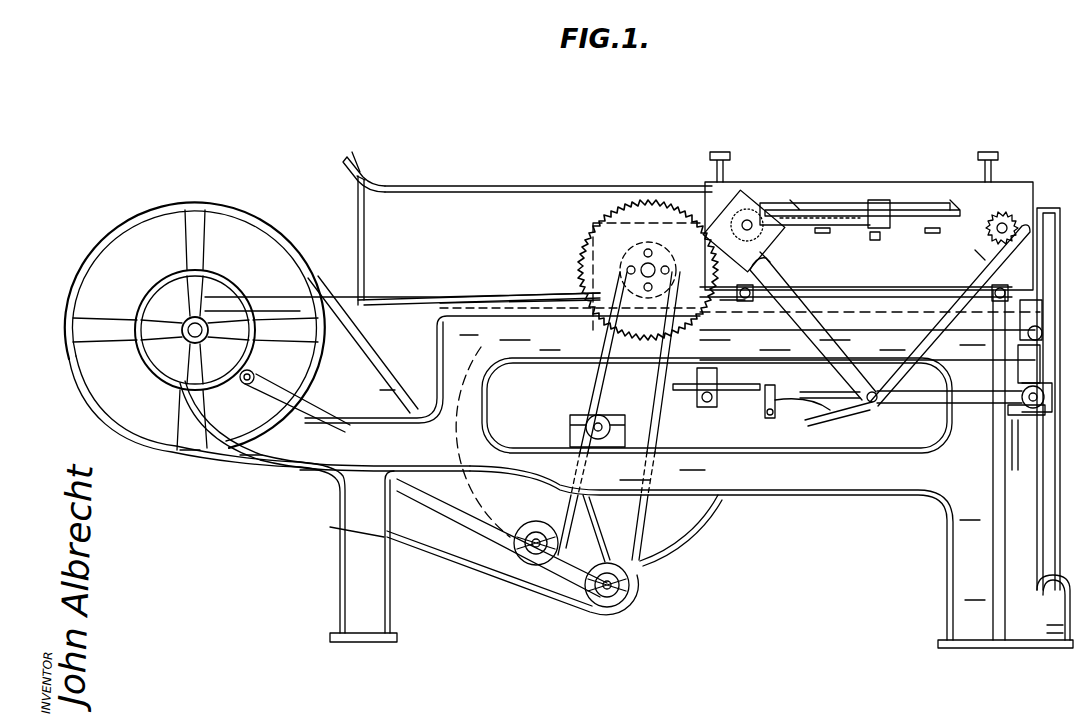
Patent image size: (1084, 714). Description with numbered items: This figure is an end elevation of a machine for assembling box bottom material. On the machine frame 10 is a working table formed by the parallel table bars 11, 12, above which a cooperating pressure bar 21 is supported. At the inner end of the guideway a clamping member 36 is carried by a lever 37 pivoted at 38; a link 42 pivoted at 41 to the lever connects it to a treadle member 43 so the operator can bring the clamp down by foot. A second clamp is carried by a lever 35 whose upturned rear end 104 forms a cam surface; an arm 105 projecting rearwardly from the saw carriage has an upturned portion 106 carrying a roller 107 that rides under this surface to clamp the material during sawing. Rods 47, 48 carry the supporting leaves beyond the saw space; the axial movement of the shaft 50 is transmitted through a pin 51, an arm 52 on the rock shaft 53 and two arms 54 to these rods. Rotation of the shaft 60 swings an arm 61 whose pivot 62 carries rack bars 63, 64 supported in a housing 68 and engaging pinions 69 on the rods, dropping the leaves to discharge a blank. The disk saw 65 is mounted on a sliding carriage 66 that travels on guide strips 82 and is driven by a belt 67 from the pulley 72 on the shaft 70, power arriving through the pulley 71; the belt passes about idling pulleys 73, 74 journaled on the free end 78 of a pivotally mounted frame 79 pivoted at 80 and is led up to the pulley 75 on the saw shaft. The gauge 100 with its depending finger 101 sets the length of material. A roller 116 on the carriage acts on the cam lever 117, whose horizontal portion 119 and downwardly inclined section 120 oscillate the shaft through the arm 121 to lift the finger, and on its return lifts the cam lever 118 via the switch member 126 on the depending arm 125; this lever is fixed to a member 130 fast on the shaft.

The machine frame 10 is at (262, 442).
The table bar 11 is at (930, 235).
The table bar 12 is at (823, 234).
The pressure bar 21 is at (815, 205).
The lever 35 is at (541, 189).
The clamping member 36 is at (858, 211).
The lever 37 is at (1042, 210).
The pivot 38 is at (700, 195).
The pivot 41 is at (1061, 216).
The link 42 is at (1060, 490).
The treadle member 43 is at (1055, 640).
The rod 47 is at (760, 220).
The rod 48 is at (1025, 200).
The shaft 50 is at (1043, 331).
The pin 51 is at (1045, 340).
The arm 52 is at (1046, 315).
The rock shaft 53 is at (912, 297).
The arms 54 is at (742, 302).
The shaft 60 is at (1046, 394).
The arm 61 is at (970, 404).
The pivot 62 is at (872, 404).
The rack bar 63 is at (840, 352).
The rack bar 64 is at (918, 342).
The disk saw 65 is at (641, 224).
The sliding carriage 66 is at (585, 224).
The belt 67 is at (372, 360).
The housing 68 is at (772, 260).
The pinion 69 is at (1004, 224).
The shaft 70 is at (183, 340).
The pulley 71 is at (160, 392).
The pulley 72 is at (206, 224).
The idling pulley 73 is at (545, 525).
The idling pulley 74 is at (627, 574).
The pulley 75 is at (669, 258).
The free end 78 is at (576, 580).
The pivotally mounted frame 79 is at (446, 500).
The pivot 80 is at (252, 377).
The guide strips 82 is at (536, 312).
The gauge 100 is at (884, 230).
The finger 101 is at (872, 240).
The rear end 104 is at (356, 163).
The arm 105 is at (388, 299).
The upturned portion 106 is at (365, 242).
The roller 107 is at (357, 177).
The roller 116 is at (700, 398).
The cam lever 117 is at (872, 424).
The cam lever 118 is at (800, 420).
The horizontal portion 119 is at (672, 386).
The downwardly inclined section 120 is at (780, 414).
The arm 121 is at (1020, 416).
The depending arm 125 is at (772, 420).
The switch member 126 is at (812, 409).
The member 130 is at (1052, 415).